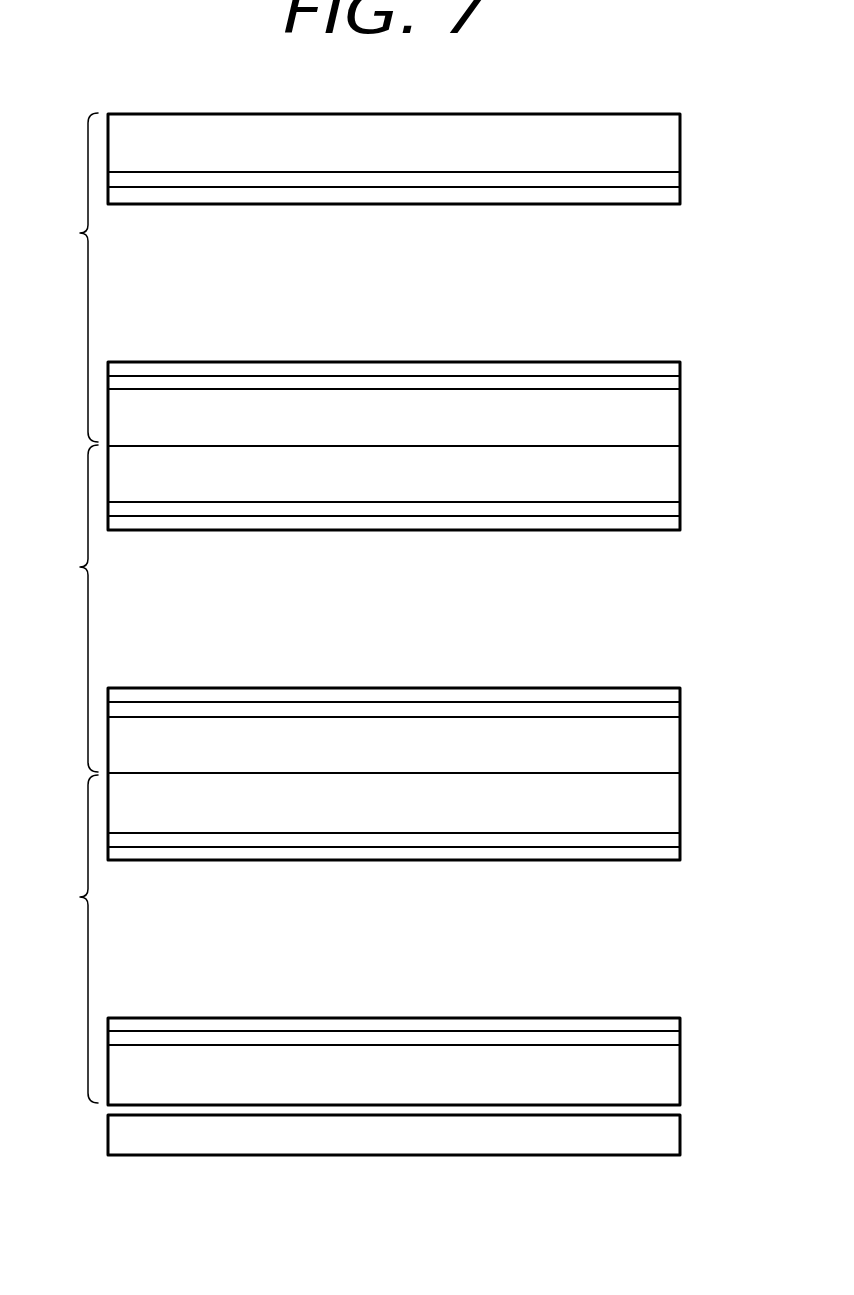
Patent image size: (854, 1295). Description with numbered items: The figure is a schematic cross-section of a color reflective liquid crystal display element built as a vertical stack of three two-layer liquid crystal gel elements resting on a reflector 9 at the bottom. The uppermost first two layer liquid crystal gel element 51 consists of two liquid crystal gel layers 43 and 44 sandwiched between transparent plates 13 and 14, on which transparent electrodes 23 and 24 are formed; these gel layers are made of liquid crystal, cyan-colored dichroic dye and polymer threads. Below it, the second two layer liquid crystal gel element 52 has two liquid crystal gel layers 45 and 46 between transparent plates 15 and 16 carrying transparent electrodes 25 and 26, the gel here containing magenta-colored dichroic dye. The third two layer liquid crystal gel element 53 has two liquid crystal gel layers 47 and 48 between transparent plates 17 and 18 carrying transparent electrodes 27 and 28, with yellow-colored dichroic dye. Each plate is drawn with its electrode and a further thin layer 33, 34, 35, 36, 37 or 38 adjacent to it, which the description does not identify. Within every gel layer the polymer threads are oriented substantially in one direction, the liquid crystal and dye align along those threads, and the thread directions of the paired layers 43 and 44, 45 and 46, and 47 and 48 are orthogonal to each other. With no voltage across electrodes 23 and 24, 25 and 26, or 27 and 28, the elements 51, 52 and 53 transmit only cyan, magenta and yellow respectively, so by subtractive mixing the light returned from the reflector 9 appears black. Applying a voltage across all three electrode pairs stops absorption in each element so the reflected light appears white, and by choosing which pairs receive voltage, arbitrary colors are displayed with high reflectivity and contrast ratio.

The reflector 9 is at (672, 1135).
The transparent plate 13 is at (672, 132).
The transparent plate 14 is at (672, 418).
The transparent plate 15 is at (678, 480).
The transparent plate 16 is at (672, 740).
The transparent plate 17 is at (672, 812).
The transparent plate 18 is at (672, 1073).
The transparent electrode 23 is at (676, 178).
The transparent electrode 24 is at (678, 378).
The transparent electrode 25 is at (678, 508).
The transparent electrode 26 is at (678, 707).
The transparent electrode 27 is at (678, 833).
The transparent electrode 28 is at (680, 1030).
The adhesion layer 33 is at (678, 198).
The adhesion layer 34 is at (675, 360).
The adhesion layer 35 is at (680, 528).
The adhesion layer 36 is at (675, 688).
The adhesion layer 37 is at (680, 853).
The adhesion layer 38 is at (675, 1018).
The liquid crystal gel layer 43 is at (645, 241).
The liquid crystal gel layer 44 is at (642, 323).
The liquid crystal gel layer 45 is at (645, 568).
The liquid crystal gel layer 46 is at (642, 650).
The liquid crystal gel layer 47 is at (645, 895).
The liquid crystal gel layer 48 is at (642, 978).
The first two layer liquid crystal gel element 51 is at (71, 277).
The second two layer liquid crystal gel element 52 is at (71, 608).
The third two layer liquid crystal gel element 53 is at (71, 939).